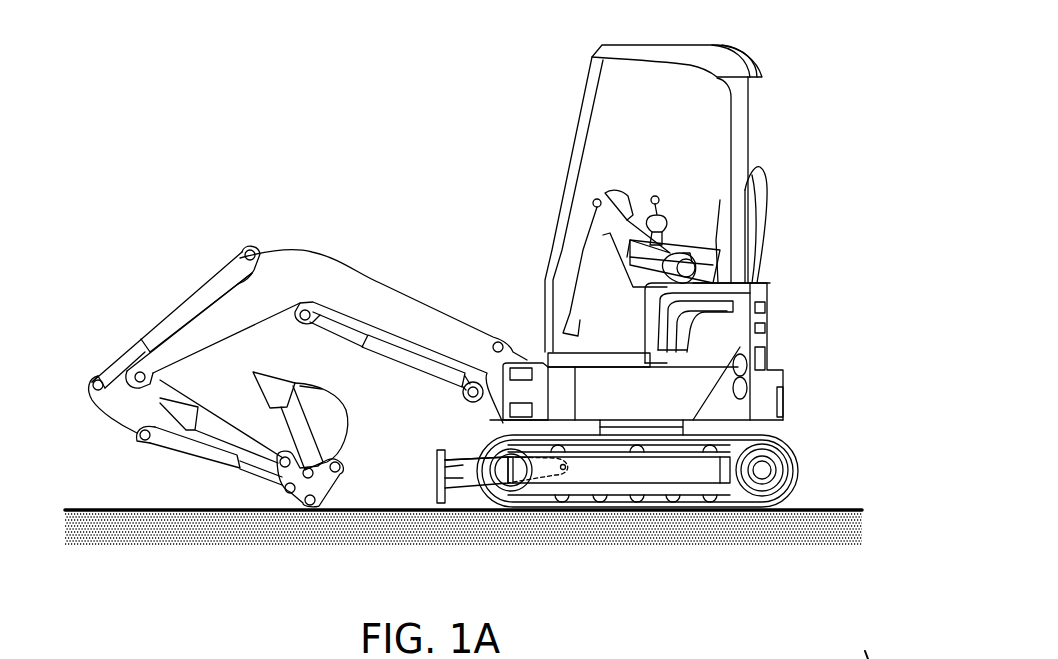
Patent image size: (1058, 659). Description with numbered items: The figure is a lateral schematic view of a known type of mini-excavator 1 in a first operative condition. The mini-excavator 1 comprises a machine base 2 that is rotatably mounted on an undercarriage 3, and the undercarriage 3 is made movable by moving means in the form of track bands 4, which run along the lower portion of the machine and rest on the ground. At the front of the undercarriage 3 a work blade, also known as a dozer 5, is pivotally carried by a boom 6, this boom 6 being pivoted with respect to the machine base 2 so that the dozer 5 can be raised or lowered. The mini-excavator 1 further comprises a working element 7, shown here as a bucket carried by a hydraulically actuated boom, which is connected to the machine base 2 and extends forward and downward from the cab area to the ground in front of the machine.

The mini-excavator 1 is at (793, 103).
The machine base 2 is at (740, 330).
The undercarriage 3 is at (807, 443).
The track bands 4 is at (800, 470).
The dozer 5 is at (438, 480).
The boom 6 is at (467, 460).
The working element 7 is at (285, 236).